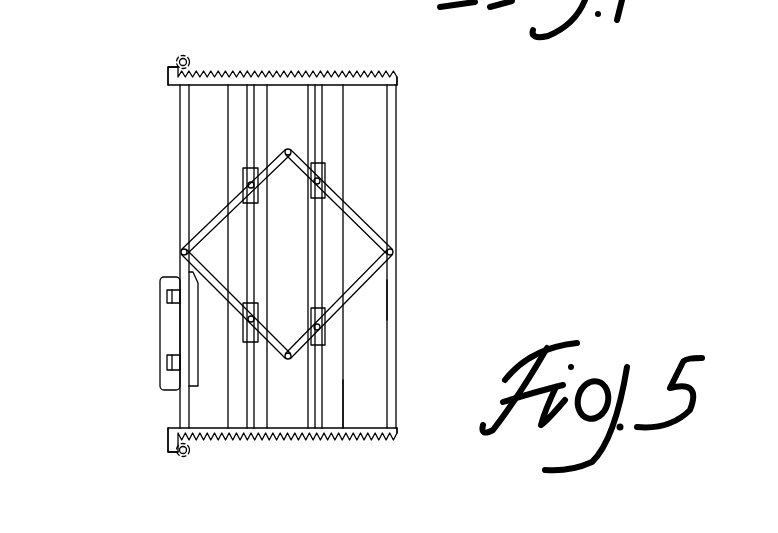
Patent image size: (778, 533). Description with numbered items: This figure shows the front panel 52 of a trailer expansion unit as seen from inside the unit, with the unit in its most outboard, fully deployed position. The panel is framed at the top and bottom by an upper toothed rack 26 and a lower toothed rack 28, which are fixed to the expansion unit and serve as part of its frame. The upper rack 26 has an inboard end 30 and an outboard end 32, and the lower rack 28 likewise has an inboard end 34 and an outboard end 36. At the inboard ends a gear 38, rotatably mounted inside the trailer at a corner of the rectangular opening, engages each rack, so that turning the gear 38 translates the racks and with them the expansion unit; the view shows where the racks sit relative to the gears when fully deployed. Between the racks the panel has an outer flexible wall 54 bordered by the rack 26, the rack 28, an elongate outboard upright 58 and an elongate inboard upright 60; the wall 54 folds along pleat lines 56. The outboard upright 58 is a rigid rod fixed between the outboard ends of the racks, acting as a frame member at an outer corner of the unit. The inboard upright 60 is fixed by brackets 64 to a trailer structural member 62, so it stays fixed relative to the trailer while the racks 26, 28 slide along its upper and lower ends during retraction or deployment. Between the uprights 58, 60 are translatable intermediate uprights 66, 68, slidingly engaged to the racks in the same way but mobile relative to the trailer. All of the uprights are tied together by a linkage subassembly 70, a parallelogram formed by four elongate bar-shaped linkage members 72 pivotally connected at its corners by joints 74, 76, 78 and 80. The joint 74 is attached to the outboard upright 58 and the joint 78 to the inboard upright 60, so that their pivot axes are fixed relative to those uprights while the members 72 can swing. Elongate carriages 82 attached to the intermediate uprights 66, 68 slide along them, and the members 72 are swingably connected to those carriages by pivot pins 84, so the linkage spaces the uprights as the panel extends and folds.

The upper toothed rack 26 is at (284, 76).
The lower toothed rack 28 is at (260, 433).
The inboard end 30 is at (166, 72).
The outboard end 32 is at (400, 82).
The inboard end 34 is at (166, 438).
The outboard end 36 is at (397, 433).
The gear 38 is at (184, 55).
The front panel 52 is at (400, 103).
The outer flexible wall 54 is at (373, 183).
The pleat lines 56 is at (230, 118).
The outboard upright 58 is at (398, 298).
The inboard upright 60 is at (180, 175).
The trailer structural member 62 is at (158, 312).
The brackets 64 is at (168, 294).
The intermediate upright 66 is at (250, 96).
The intermediate upright 68 is at (330, 388).
The linkage subassembly 70 is at (288, 263).
The linkage members 72 is at (338, 176).
The joint 74 is at (395, 252).
The joint 76 is at (293, 152).
The joint 78 is at (178, 253).
The joint 80 is at (288, 362).
The carriage 82 is at (323, 338).
The pivot pin 84 is at (325, 328).